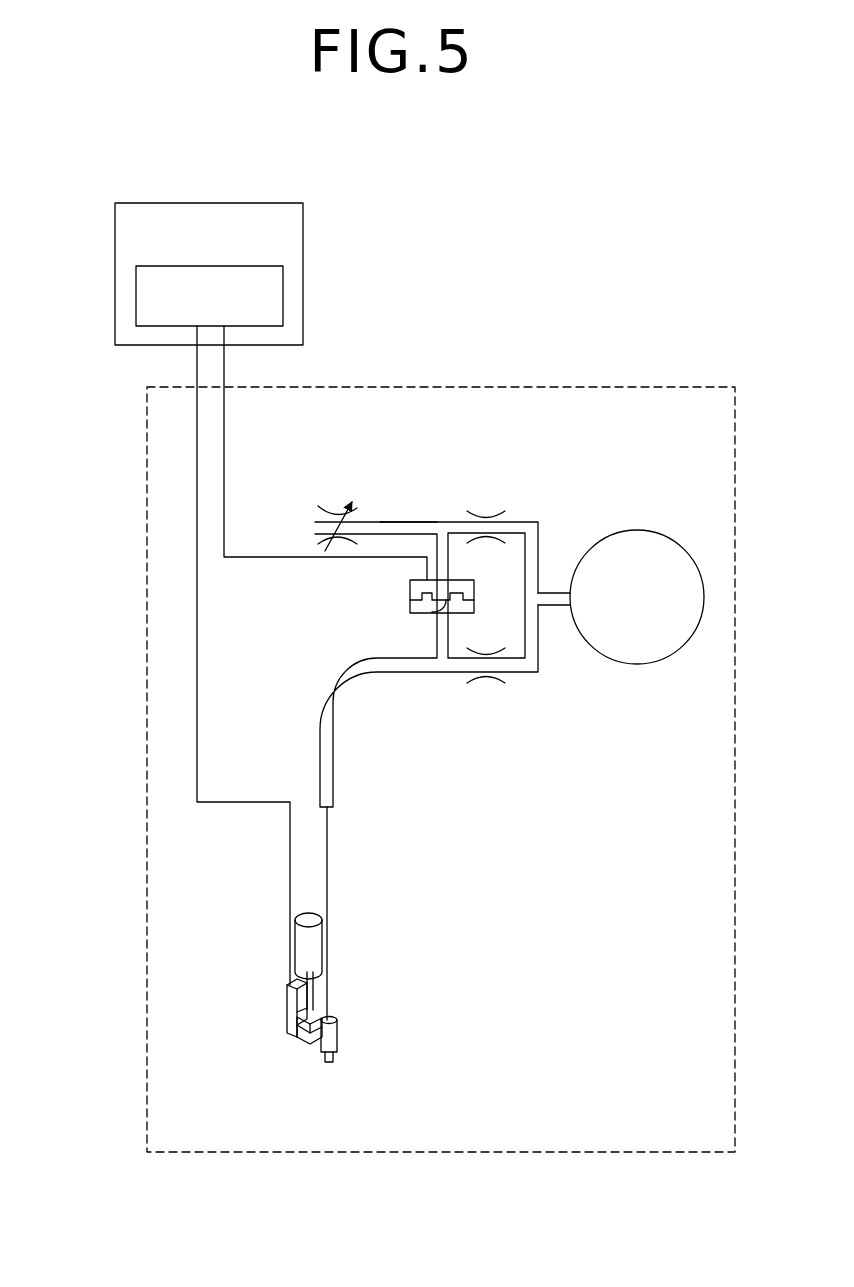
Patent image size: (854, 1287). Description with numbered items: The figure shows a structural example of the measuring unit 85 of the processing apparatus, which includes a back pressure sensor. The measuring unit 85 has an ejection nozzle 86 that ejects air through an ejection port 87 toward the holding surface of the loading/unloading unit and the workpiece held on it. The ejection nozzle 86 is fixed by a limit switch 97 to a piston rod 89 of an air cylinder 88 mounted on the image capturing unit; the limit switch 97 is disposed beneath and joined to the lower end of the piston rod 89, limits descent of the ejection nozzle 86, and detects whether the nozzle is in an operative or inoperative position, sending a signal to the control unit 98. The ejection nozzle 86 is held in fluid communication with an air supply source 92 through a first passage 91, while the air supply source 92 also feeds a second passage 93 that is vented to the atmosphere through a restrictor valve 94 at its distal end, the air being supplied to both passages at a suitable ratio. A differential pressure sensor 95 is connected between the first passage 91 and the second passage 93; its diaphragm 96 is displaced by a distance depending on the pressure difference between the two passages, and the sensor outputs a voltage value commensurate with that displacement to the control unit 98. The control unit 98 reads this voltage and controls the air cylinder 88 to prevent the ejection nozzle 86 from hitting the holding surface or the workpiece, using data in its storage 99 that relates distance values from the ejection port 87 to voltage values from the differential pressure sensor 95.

The measuring unit 85 is at (631, 386).
The ejection nozzle 86 is at (331, 1037).
The ejection port 87 is at (329, 1063).
The air cylinder 88 is at (307, 955).
The piston rod 89 is at (302, 1008).
The first passage 91 is at (411, 675).
The air supply source 92 is at (636, 530).
The second passage 93 is at (410, 520).
The restrictor valve 94 is at (340, 494).
The differential pressure sensor 95 is at (410, 582).
The diaphragm 96 is at (410, 606).
The limit switch 97 is at (297, 1038).
The control unit 98 is at (115, 222).
The storage 99 is at (136, 283).